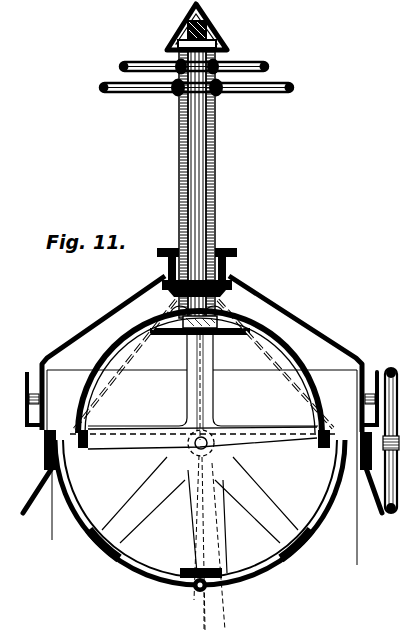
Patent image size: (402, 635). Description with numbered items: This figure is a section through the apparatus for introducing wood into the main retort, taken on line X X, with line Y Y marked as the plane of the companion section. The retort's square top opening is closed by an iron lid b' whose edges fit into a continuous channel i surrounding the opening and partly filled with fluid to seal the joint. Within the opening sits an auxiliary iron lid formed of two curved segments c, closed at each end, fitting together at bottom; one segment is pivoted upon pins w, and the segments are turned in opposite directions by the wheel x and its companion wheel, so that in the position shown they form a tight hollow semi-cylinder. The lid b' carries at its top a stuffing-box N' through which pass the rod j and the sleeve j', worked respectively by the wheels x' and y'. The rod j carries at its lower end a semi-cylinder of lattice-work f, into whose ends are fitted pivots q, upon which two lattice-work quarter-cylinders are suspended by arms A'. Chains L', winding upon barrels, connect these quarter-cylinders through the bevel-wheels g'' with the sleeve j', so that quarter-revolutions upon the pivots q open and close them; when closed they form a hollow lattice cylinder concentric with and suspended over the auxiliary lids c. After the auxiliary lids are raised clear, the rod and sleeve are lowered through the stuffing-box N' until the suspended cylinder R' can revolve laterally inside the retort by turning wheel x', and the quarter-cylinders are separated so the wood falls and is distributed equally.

The wheel x' is at (195, 58).
The wheel y' is at (207, 93).
The rod j is at (171, 183).
The sleeve j' is at (209, 183).
The stuffing-box N' is at (203, 289).
The iron lid b' is at (202, 354).
The chains L' is at (202, 366).
The semi-cylinder of lattice-work f is at (200, 372).
The suspended cylinder R' is at (202, 450).
The bevel-wheels g'' is at (205, 423).
The pivot q is at (246, 457).
The channel or groove i is at (202, 421).
The pins w is at (359, 447).
The wheel x is at (211, 454).
The arms A' is at (200, 515).
The curved segments c is at (200, 512).
The section line Y is at (210, 542).